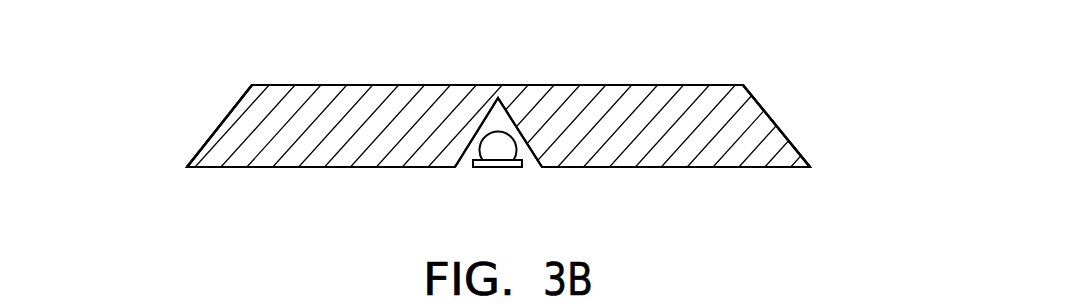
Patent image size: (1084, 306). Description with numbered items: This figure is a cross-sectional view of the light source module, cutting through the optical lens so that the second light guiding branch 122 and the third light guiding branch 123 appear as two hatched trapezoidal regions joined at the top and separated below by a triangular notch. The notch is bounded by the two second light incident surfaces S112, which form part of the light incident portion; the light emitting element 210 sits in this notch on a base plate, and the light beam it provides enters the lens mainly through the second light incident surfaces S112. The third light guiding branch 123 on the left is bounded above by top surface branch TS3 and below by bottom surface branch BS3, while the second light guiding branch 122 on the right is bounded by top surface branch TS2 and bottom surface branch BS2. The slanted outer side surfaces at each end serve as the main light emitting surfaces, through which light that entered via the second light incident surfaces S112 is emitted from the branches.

The third light guiding branch 123 is at (258, 98).
The second light guiding branch 122 is at (737, 103).
The top surface branch TS3 is at (367, 84).
The top surface branch TS2 is at (625, 85).
The second light incident surface S112 is at (477, 130).
The bottom surface branch BS3 is at (337, 167).
The bottom surface branch BS2 is at (675, 167).
The light emitting element 210 is at (498, 148).